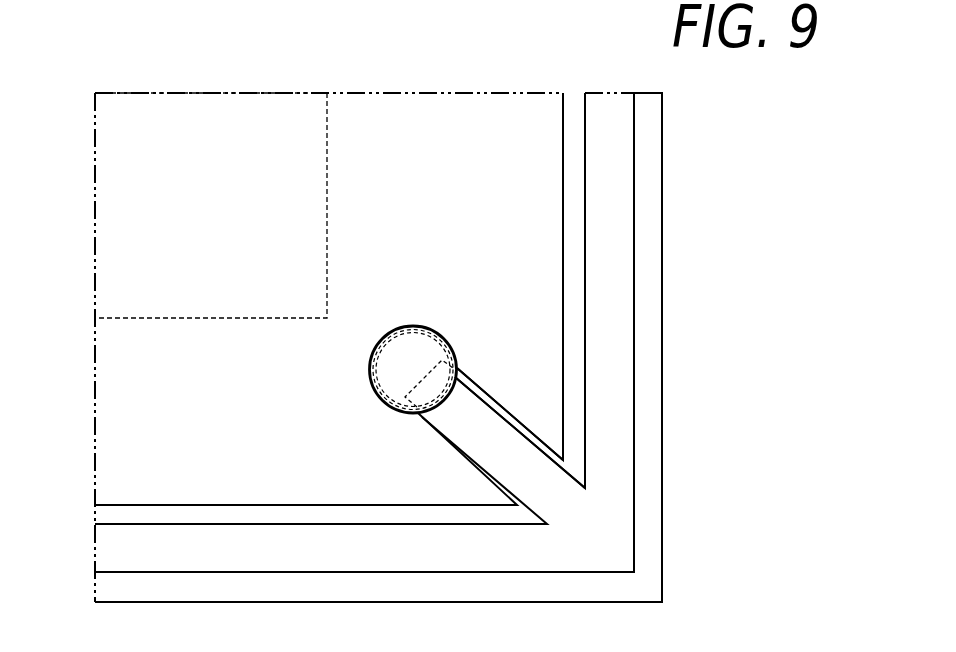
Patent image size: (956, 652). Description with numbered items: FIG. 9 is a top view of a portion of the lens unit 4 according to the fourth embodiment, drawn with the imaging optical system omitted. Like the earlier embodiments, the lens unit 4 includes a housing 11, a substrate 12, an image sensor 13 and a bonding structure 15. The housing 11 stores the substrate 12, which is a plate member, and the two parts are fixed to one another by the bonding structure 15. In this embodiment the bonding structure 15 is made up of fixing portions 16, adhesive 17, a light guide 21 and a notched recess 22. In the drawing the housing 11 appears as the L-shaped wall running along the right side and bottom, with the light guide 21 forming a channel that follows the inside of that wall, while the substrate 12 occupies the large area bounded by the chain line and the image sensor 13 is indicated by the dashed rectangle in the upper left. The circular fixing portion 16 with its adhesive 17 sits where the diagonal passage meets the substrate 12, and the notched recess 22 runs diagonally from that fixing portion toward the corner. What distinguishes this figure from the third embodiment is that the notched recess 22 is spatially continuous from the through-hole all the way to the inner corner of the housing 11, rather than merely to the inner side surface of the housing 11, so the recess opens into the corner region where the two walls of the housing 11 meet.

The lens unit 4 is at (401, 56).
The housing 11 is at (652, 196).
The substrate 12 is at (158, 424).
The image sensor 13 is at (297, 213).
The bonding structure 15 is at (428, 318).
The fixing portion 16 is at (372, 372).
The adhesive 17 is at (381, 398).
The light guide 21 is at (609, 124).
The notched recess 22 is at (495, 400).